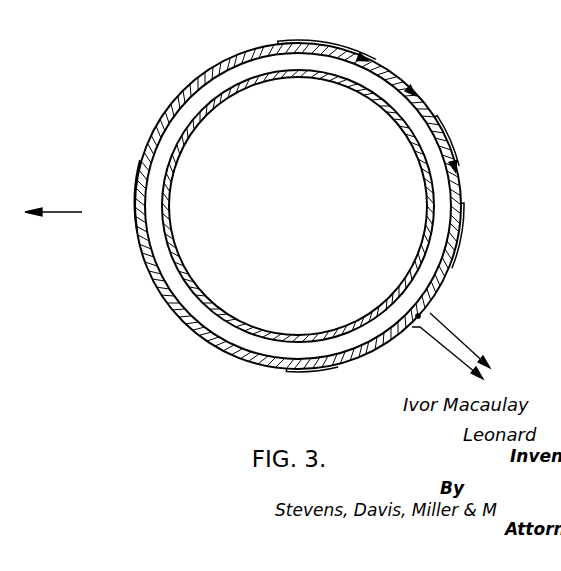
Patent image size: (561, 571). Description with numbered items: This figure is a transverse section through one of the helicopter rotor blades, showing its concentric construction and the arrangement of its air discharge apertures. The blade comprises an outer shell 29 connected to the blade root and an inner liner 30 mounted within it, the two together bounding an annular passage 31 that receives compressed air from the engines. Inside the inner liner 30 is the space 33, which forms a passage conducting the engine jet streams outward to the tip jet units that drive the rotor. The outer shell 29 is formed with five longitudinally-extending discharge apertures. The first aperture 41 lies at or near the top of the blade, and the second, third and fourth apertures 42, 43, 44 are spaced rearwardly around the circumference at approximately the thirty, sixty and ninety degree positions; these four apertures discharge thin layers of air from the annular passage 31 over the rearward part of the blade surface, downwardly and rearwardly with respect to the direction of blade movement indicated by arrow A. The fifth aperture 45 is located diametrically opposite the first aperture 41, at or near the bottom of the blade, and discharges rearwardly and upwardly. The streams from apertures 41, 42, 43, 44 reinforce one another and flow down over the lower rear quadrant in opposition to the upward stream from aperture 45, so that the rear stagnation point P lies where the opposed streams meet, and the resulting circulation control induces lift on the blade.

The outer shell 29 is at (185, 91).
The inner liner 30 is at (193, 298).
The annular passage 31 is at (143, 172).
The space within the blade liner 33 is at (308, 208).
The first aperture 41 is at (282, 47).
The second aperture 42 is at (355, 60).
The third aperture 43 is at (432, 118).
The fourth aperture 44 is at (458, 202).
The fifth aperture 45 is at (286, 365).
The rear stagnation point P is at (418, 316).
The arrow indicating direction of movement of the blade A is at (53, 201).